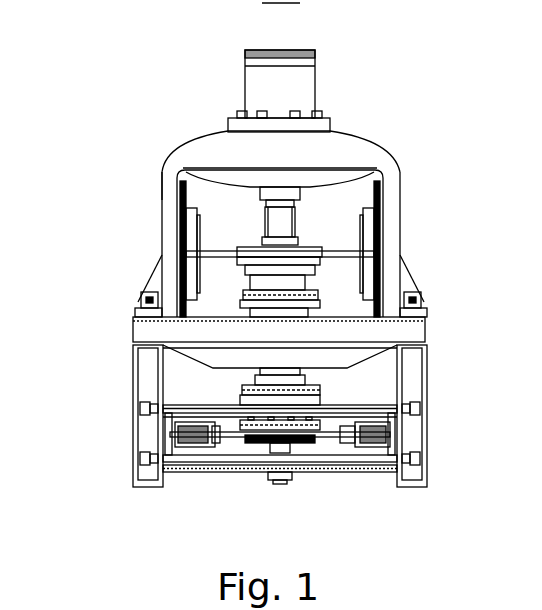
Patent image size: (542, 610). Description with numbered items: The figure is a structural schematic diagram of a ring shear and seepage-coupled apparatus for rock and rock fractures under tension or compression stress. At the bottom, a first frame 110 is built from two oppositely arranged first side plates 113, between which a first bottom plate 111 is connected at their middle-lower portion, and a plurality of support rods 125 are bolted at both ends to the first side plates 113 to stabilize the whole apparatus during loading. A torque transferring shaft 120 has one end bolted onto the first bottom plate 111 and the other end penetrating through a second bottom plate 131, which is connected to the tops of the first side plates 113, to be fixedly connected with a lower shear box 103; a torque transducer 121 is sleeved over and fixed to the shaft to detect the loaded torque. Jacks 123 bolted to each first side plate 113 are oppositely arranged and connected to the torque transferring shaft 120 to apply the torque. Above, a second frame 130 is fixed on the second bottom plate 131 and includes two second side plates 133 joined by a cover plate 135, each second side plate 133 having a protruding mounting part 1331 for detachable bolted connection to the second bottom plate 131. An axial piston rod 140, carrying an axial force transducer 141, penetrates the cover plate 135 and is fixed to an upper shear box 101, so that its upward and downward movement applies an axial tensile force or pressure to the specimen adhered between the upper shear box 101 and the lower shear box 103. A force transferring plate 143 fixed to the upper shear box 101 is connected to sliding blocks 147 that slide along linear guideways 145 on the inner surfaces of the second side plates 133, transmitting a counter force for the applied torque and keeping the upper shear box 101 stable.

The upper shear box 101 is at (288, 272).
The lower shear box 103 is at (310, 300).
The first frame 110 is at (95, 460).
The first bottom plate 111 is at (230, 465).
The first side plate 113 is at (415, 445).
The torque transferring shaft 120 is at (285, 452).
The torque transducer 121 is at (277, 418).
The jack 123 is at (185, 432).
The support rod 125 is at (375, 408).
The second frame 130 is at (192, 102).
The second bottom plate 131 is at (368, 333).
The second side plate 133 is at (390, 237).
The mounting part 1331 is at (408, 284).
The cover plate 135 is at (307, 143).
The axial piston rod 140 is at (305, 90).
The axial force transducer 141 is at (265, 222).
The force transferring plate 143 is at (191, 257).
The linear guideway 145 is at (165, 178).
The sliding block 147 is at (183, 232).